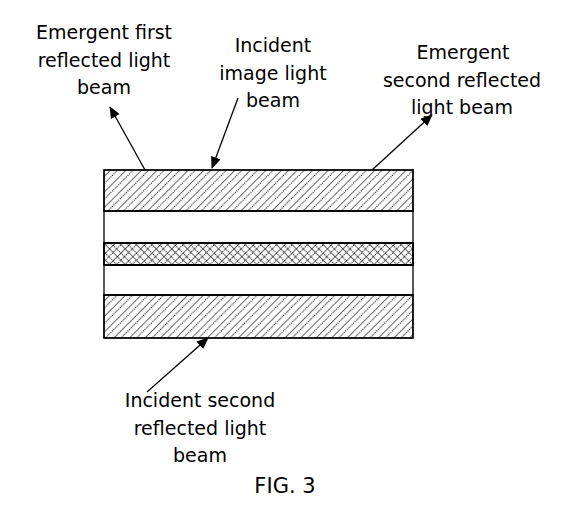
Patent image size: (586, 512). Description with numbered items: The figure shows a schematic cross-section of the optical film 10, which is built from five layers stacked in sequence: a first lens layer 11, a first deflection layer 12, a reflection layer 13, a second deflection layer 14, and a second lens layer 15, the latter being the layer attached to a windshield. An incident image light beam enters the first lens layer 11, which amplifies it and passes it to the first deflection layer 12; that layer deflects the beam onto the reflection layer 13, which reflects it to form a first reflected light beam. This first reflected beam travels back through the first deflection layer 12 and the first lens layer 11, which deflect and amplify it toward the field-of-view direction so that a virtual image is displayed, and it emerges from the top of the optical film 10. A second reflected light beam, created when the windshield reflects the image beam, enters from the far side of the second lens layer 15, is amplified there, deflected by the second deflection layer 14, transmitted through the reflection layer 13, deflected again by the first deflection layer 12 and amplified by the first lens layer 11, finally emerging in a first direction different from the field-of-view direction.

The optical film 10 is at (319, 254).
The first lens layer 11 is at (413, 195).
The first deflection layer 12 is at (413, 223).
The reflection layer 13 is at (413, 250).
The second deflection layer 14 is at (413, 275).
The second lens layer 15 is at (293, 316).